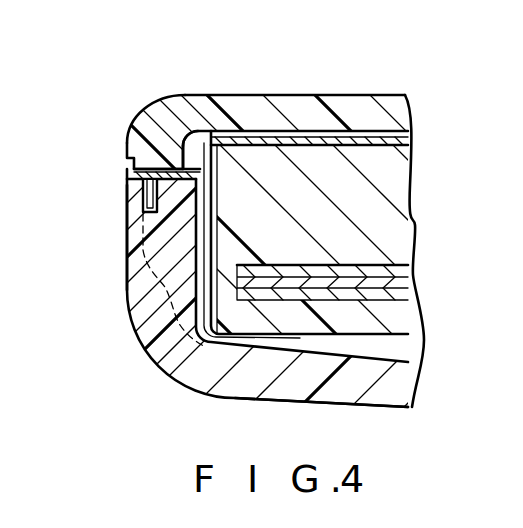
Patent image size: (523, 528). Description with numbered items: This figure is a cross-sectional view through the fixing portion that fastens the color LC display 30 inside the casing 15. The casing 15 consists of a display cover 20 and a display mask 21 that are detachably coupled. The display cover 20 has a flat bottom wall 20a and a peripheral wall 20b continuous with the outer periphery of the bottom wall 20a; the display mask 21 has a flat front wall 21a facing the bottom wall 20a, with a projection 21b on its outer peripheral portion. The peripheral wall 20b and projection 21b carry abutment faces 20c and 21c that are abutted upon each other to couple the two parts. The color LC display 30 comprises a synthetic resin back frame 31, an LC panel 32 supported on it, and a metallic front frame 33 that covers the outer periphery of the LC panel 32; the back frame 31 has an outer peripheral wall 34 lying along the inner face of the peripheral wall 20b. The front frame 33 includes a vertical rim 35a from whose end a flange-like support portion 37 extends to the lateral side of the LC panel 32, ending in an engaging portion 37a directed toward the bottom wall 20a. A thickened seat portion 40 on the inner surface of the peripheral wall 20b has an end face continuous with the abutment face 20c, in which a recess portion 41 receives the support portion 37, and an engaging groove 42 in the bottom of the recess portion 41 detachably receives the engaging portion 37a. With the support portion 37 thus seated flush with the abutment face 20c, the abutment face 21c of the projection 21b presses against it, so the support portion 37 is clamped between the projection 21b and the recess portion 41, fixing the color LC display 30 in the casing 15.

The casing 15 is at (142, 362).
The display cover 20 is at (160, 322).
The bottom wall 20a is at (400, 391).
The peripheral wall 20b is at (158, 282).
The abutment face 20c is at (128, 181).
The display mask 21 is at (326, 94).
The front wall 21a is at (388, 100).
The projection 21b is at (197, 127).
The abutment face 21c is at (129, 145).
The color liquid crystal display 30 is at (395, 179).
The back frame 31 is at (406, 323).
The LC panel 32 is at (398, 238).
The front frame 33 is at (405, 133).
The outer peripheral wall 34 is at (222, 248).
The vertical rim 35a is at (188, 213).
The support portion 37 is at (182, 152).
The engaging portion 37a is at (146, 198).
The seat portion 40 is at (266, 150).
The recess portion 41 is at (141, 168).
The engaging groove 42 is at (150, 232).